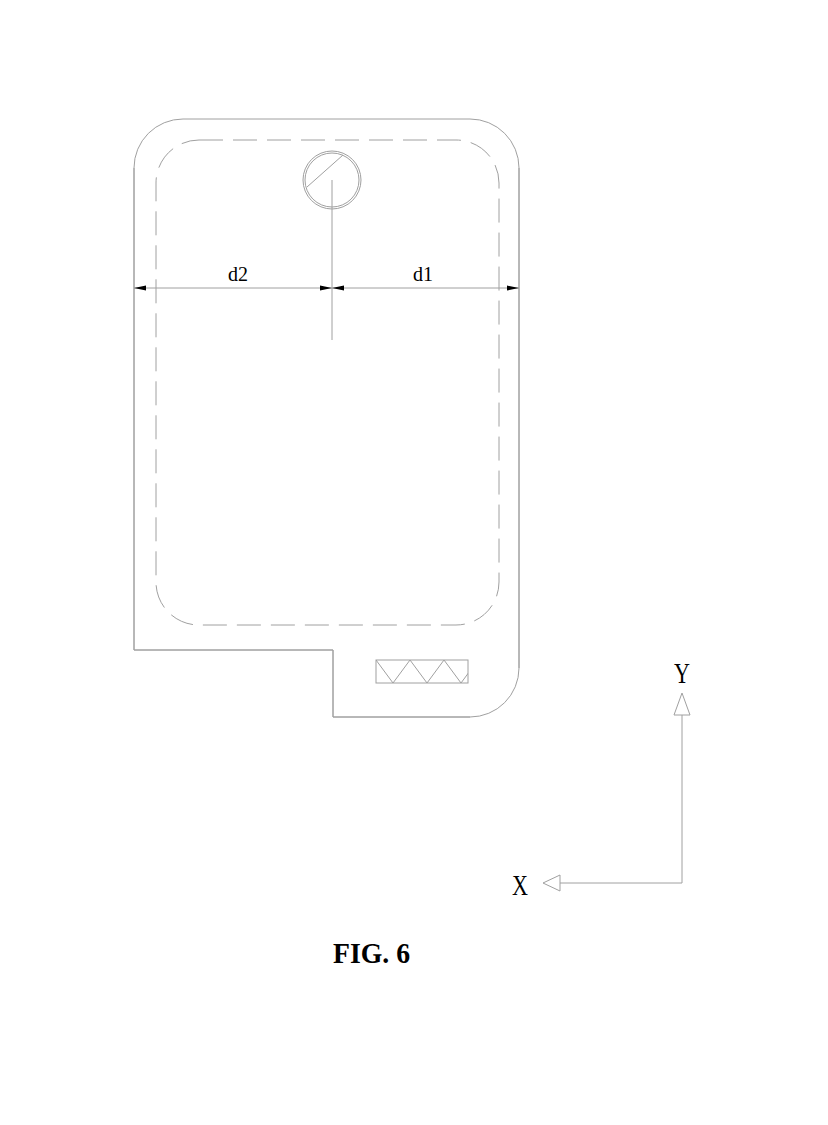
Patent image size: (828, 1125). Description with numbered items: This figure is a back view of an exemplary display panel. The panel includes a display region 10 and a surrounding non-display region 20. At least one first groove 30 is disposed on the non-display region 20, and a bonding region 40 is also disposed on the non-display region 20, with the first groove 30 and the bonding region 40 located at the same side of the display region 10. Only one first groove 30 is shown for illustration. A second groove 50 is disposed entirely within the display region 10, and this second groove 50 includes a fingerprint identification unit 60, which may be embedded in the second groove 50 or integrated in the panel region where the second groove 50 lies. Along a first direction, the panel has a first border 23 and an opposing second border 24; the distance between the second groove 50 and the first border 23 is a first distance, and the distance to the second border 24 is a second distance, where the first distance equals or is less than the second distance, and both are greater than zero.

The display region 10 is at (462, 265).
The non-display region 20 is at (510, 437).
The first border 23 is at (519, 319).
The second border 24 is at (134, 325).
The first groove 30 is at (203, 685).
The bonding region 40 is at (427, 683).
The second groove 50 is at (333, 200).
The fingerprint identification unit 60 is at (332, 160).